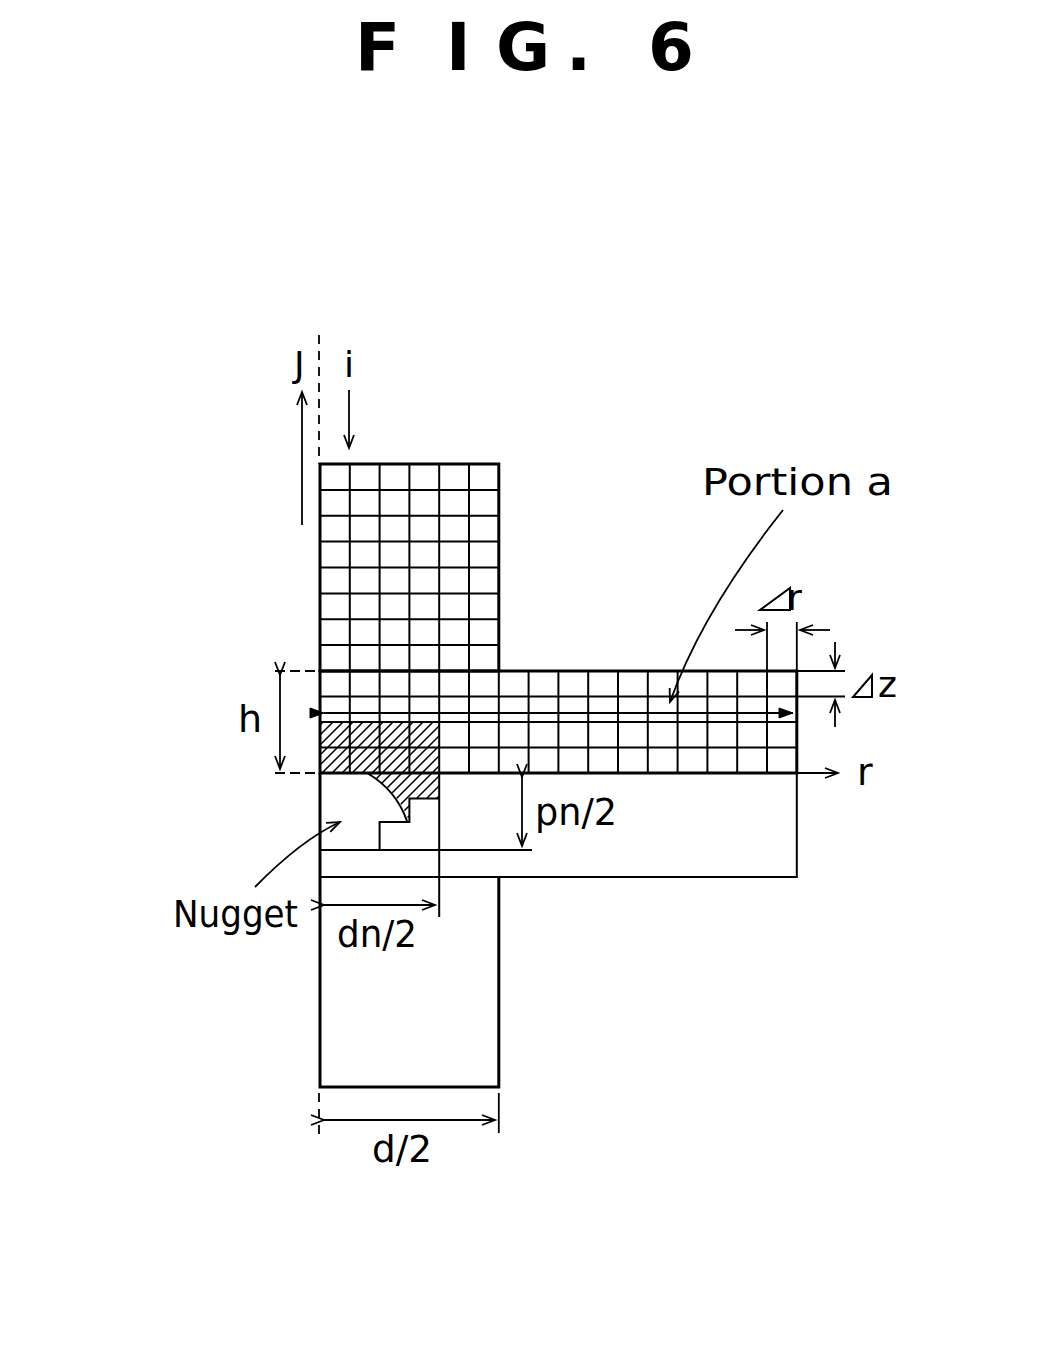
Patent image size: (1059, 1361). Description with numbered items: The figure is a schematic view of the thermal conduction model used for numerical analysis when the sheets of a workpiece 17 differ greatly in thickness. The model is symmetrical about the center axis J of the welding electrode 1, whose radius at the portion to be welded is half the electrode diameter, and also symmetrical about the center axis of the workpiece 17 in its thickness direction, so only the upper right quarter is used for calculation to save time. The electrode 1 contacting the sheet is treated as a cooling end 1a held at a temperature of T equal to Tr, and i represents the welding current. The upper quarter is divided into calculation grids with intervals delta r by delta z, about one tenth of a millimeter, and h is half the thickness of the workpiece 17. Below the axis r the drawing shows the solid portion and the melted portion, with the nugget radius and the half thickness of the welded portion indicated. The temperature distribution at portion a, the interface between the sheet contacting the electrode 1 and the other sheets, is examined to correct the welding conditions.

The welding electrode 1 is at (470, 730).
The cooling end 1a is at (409, 522).
The workpiece 17 is at (633, 740).